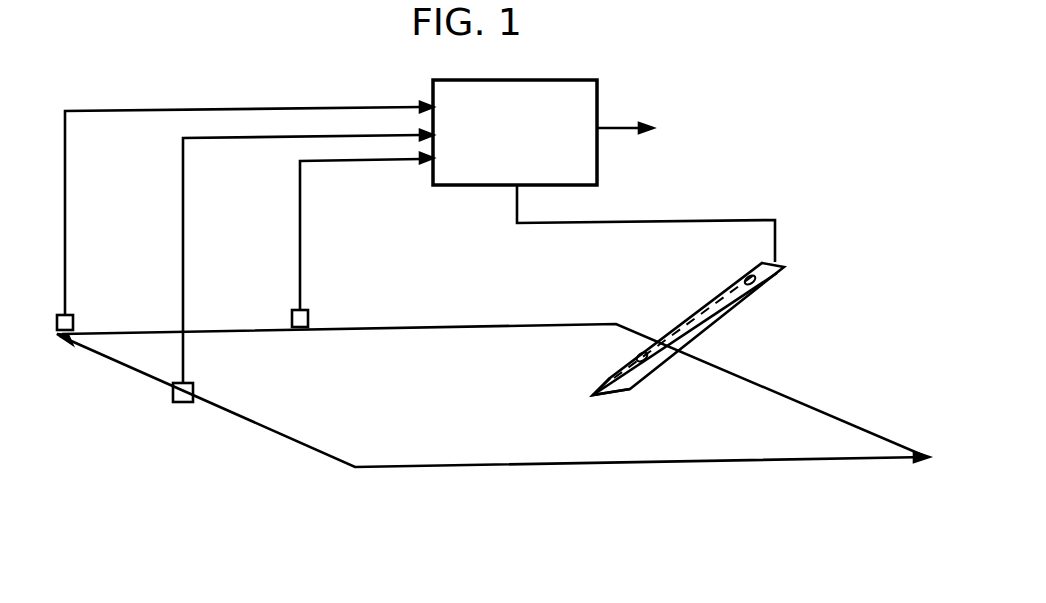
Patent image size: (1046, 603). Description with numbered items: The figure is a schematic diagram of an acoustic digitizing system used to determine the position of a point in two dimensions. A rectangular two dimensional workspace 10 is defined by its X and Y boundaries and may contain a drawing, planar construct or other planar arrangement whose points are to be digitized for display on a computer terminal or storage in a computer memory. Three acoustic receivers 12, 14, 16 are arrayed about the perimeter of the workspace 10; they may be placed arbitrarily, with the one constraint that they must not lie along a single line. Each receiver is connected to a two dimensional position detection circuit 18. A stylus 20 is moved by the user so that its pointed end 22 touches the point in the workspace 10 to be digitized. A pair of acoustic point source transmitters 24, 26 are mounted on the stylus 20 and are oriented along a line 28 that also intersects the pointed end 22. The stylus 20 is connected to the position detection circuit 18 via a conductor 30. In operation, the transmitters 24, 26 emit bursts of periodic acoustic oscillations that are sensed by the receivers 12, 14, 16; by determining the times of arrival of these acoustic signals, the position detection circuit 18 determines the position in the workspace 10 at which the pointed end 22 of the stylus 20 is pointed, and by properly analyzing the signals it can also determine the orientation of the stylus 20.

The two dimensional workspace 10 is at (810, 428).
The acoustic receiver 12 is at (183, 402).
The acoustic receiver 14 is at (74, 323).
The acoustic receiver 16 is at (308, 318).
The two dimensional position detection circuit 18 is at (597, 158).
The stylus 20 is at (786, 276).
The pointed end 22 is at (593, 397).
The acoustic point source transmitter 24 is at (757, 290).
The acoustic point source transmitter 26 is at (648, 364).
The line 28 is at (716, 297).
The conductor 30 is at (697, 220).